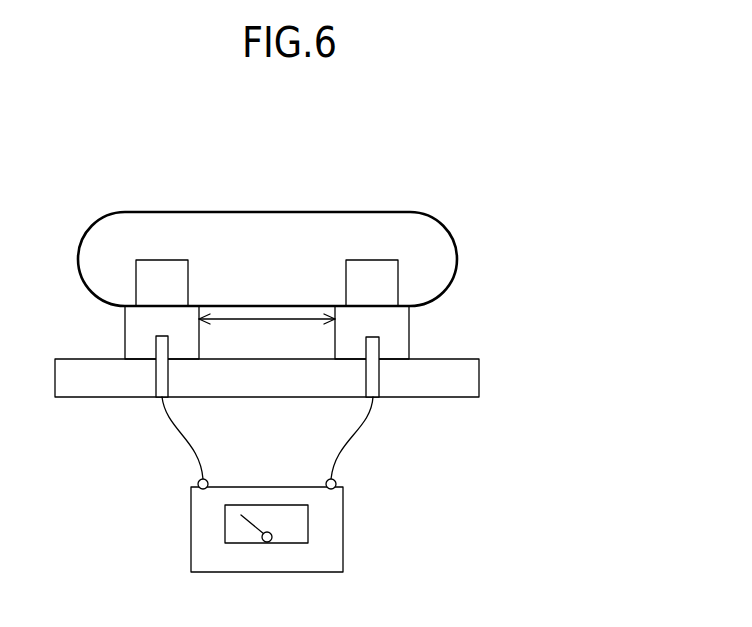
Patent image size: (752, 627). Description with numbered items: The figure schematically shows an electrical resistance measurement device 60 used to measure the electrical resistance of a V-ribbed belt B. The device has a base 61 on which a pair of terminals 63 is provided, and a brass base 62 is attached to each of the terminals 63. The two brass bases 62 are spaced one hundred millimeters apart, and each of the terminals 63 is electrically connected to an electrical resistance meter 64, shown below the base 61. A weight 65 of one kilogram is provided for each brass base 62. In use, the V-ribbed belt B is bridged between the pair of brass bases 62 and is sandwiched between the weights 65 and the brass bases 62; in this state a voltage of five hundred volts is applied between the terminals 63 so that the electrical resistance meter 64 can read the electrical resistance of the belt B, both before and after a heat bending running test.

The V-ribbed belt B is at (286, 211).
The electrical resistance measurement device 60 is at (541, 167).
The base 61 is at (479, 383).
The brass base 62 is at (125, 330).
The terminal 63 is at (366, 383).
The electrical resistance meter 64 is at (333, 523).
The weight 65 is at (355, 287).